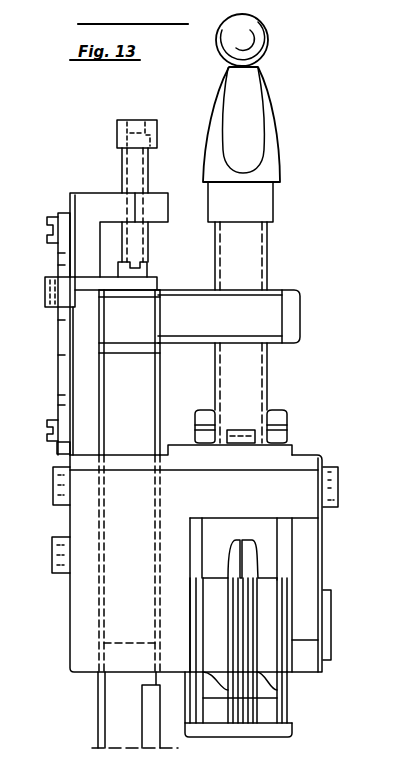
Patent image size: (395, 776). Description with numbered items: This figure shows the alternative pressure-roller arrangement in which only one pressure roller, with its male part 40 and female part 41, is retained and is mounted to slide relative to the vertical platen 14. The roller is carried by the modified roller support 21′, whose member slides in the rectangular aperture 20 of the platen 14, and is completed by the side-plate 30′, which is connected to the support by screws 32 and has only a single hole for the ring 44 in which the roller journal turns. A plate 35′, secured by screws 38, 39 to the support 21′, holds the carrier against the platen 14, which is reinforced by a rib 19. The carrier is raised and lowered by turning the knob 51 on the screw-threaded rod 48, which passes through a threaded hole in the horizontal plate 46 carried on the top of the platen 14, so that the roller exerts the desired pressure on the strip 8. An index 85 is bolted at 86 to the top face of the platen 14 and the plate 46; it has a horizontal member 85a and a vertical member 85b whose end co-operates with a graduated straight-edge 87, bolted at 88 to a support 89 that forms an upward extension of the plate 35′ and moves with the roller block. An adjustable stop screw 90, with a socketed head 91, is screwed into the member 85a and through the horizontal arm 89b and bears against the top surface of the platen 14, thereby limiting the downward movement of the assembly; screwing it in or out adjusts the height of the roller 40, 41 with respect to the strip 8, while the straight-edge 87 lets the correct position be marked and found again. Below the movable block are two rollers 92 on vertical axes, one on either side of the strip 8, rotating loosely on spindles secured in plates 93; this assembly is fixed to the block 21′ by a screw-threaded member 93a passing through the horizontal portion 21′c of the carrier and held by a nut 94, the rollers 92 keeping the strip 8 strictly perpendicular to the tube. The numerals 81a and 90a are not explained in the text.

The knob 51 is at (245, 103).
The screw-threaded rod 48 is at (240, 234).
The horizontal plate 46 is at (245, 310).
The nut 94 is at (275, 432).
The screw-threaded member 93a is at (278, 417).
The roller support 21′ is at (176, 558).
The horizontal portion of the roller carrier 21′c is at (240, 485).
The screws 32 is at (340, 472).
The rings 44 is at (320, 629).
The side-plate 30′ is at (305, 546).
The male part of the pressure roller 40 is at (268, 573).
The female part of the pressure roller 41 is at (222, 568).
The strip 8 is at (250, 710).
The rollers 92 is at (245, 690).
The plates 93 is at (240, 731).
The rectangular aperture 20 is at (116, 642).
The vertical platen 14 is at (135, 377).
The graduated straight-edge 87 is at (58, 379).
The bolting of the straight-edge 88 is at (66, 196).
The screws 39 is at (55, 445).
The rib 19 is at (53, 502).
The plate 35′ is at (87, 532).
The screws 38 is at (52, 565).
The index 85 is at (46, 292).
The vertical member of the index 85b is at (52, 284).
The horizontal member of the index 85a is at (138, 293).
The rod portion 81a is at (84, 340).
The support 89 is at (102, 190).
The horizontal arm of the support 89b is at (140, 206).
The head of the stop screw 91 is at (152, 131).
The bolt shank 90a is at (118, 139).
The adjustable stop screw 90 is at (132, 235).
The bolting of the index 86 is at (145, 270).